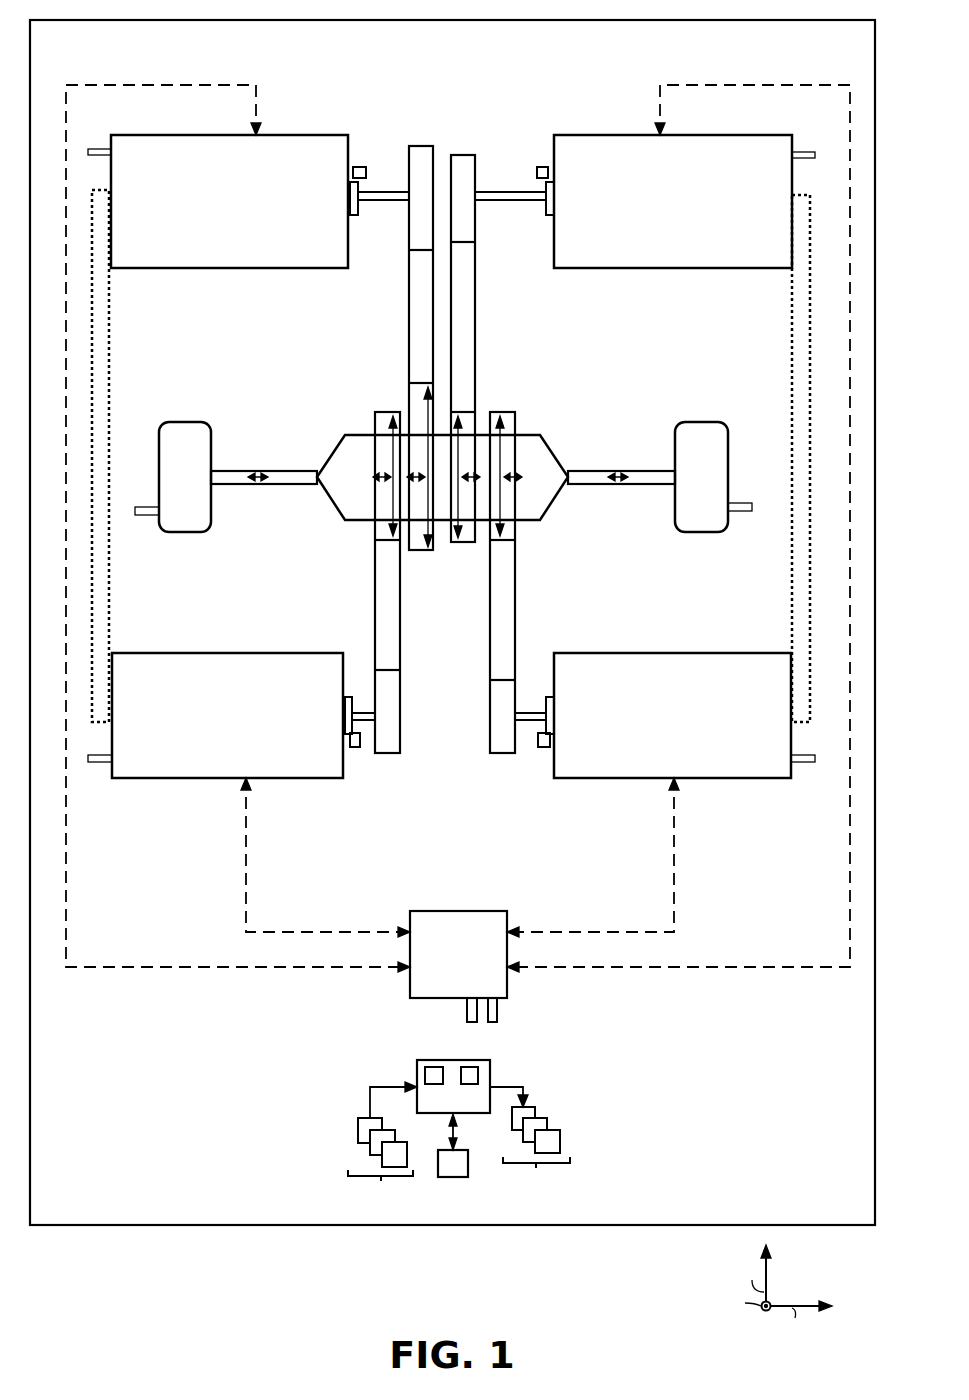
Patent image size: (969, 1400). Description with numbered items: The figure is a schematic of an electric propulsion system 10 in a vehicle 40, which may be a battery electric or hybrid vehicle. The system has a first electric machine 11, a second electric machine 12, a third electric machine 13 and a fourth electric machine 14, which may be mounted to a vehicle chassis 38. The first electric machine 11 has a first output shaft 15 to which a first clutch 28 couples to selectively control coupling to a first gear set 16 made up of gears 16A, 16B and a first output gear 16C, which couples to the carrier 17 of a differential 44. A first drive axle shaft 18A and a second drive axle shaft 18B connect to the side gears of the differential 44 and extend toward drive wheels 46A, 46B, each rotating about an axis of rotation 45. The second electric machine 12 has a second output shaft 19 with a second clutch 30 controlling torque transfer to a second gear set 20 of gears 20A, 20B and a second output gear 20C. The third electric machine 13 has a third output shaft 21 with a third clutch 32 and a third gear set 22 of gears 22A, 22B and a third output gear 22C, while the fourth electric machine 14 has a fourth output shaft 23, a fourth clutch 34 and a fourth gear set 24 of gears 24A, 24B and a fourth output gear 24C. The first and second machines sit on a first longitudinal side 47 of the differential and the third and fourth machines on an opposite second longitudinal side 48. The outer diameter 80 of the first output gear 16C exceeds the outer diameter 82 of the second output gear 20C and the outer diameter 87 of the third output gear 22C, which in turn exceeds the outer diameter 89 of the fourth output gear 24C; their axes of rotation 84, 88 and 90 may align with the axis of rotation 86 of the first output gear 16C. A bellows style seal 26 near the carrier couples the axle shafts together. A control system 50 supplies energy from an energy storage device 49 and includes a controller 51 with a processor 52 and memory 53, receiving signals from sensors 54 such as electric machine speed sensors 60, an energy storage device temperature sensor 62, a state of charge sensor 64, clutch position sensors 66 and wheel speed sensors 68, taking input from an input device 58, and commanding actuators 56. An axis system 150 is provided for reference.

The electric propulsion system 10 is at (62, 58).
The first electric machine 11 is at (193, 133).
The second electric machine 12 is at (711, 133).
The third electric machine 13 is at (720, 779).
The fourth electric machine 14 is at (187, 779).
The first output shaft 15 is at (376, 192).
The first gear set 16 is at (346, 366).
The gear 16A is at (407, 168).
The gear 16B is at (408, 338).
The first output gear 16C is at (422, 552).
The carrier 17 is at (345, 432).
The first drive axle shaft 18A is at (297, 468).
The second drive axle shaft 18B is at (588, 468).
The second output shaft 19 is at (523, 192).
The second gear set 20 is at (510, 344).
The gear 20A is at (481, 177).
The gear 20B is at (477, 296).
The second output gear 20C is at (470, 546).
The third output shaft 21 is at (532, 708).
The third gear set 22 is at (549, 588).
The gear 22A is at (490, 725).
The gear 22B is at (517, 603).
The third output gear 22C is at (511, 411).
The fourth output shaft 23 is at (363, 708).
The fourth gear set 24 is at (343, 597).
The gear 24A is at (402, 727).
The gear 24B is at (375, 580).
The fourth output gear 24C is at (386, 411).
The bellows style seal 26 is at (441, 545).
The first clutch 28 is at (366, 212).
The second clutch 30 is at (543, 213).
The third clutch 32 is at (552, 697).
The fourth clutch 34 is at (347, 700).
The vehicle chassis 38 is at (110, 358).
The vehicle 40 is at (42, 20).
The differential 44 is at (308, 526).
The axis of rotation 45 is at (261, 484).
The drive wheel 46A is at (160, 457).
The drive wheel 46B is at (728, 457).
The first longitudinal side 47 is at (553, 380).
The second longitudinal side 48 is at (549, 557).
The energy storage device 49 is at (410, 985).
The control system 50 is at (489, 1123).
The controller 51 is at (425, 1060).
The processor 52 is at (425, 1076).
The memory 53 is at (478, 1076).
The sensors 54 is at (382, 1144).
The actuators 56 is at (530, 1140).
The input device 58 is at (453, 1177).
The electric machine speed sensors 60 is at (808, 763).
The energy storage device temperature sensor 62 is at (497, 1012).
The energy storage device state of charge sensor 64 is at (467, 1012).
The clutch position sensors 66 is at (545, 748).
The wheel speed sensors 68 is at (745, 515).
The outer diameter 80 is at (421, 467).
The outer diameter 82 is at (477, 467).
The axis of rotation 84 is at (477, 486).
The axis of rotation 86 is at (421, 486).
The outer diameter 87 is at (519, 467).
The axis of rotation 88 is at (519, 486).
The outer diameter 89 is at (387, 467).
The axis of rotation 90 is at (387, 486).
The axis system 150 is at (810, 1270).